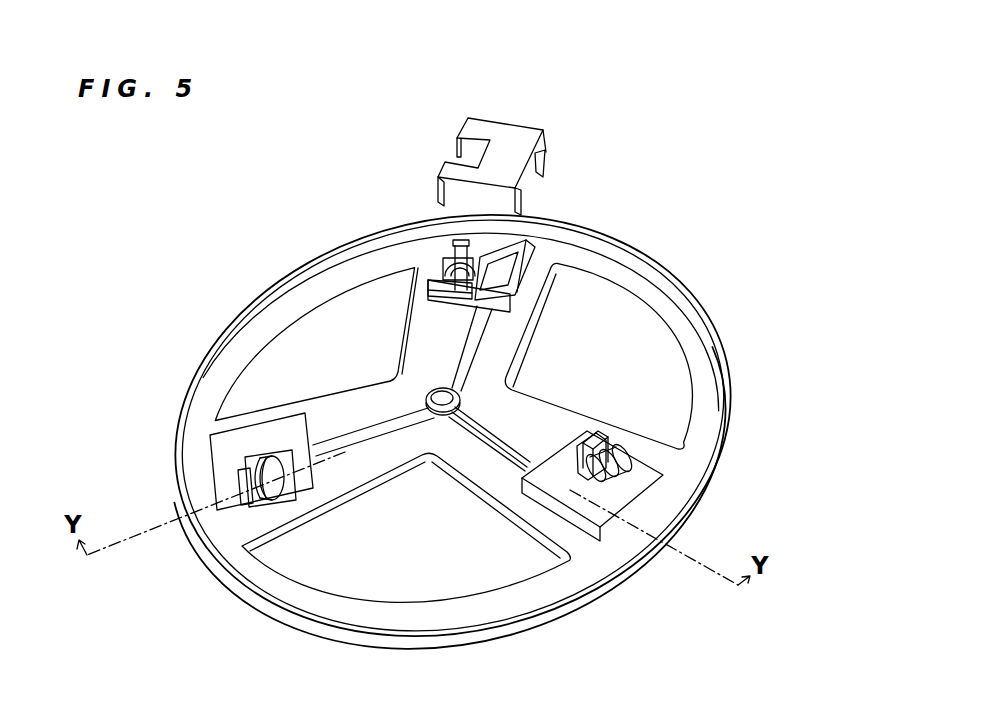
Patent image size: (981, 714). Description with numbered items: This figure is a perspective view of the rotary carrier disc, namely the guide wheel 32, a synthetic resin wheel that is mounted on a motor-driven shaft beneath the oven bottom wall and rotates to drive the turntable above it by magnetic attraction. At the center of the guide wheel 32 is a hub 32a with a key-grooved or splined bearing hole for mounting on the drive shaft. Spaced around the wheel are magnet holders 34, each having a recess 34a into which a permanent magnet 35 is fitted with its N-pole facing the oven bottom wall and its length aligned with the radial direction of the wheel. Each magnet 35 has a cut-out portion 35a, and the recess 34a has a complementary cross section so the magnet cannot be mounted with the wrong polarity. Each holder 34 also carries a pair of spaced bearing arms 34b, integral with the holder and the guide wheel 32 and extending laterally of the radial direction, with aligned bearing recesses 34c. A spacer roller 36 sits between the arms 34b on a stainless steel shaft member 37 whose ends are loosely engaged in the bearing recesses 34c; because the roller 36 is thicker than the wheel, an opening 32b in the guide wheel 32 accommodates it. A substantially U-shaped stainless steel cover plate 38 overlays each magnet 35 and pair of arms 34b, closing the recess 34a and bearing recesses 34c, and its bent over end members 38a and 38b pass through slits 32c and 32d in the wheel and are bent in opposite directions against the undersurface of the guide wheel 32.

The guide wheel 32 is at (255, 302).
The hub 32a is at (480, 383).
The opening 32b is at (638, 447).
The slit 32c is at (535, 265).
The slit 32d is at (385, 482).
The magnet holder 34 is at (520, 262).
The recess 34a is at (470, 322).
The bearing arm 34b is at (458, 248).
The bearing recess 34c is at (443, 260).
The permanent magnet 35 is at (527, 247).
The cut-out portion 35a is at (433, 382).
The spacer roller 36 is at (440, 282).
The shaft member 37 is at (440, 268).
The cover plate 38 is at (509, 148).
The bent over end member 38a is at (543, 160).
The bent over end member 38b is at (457, 143).